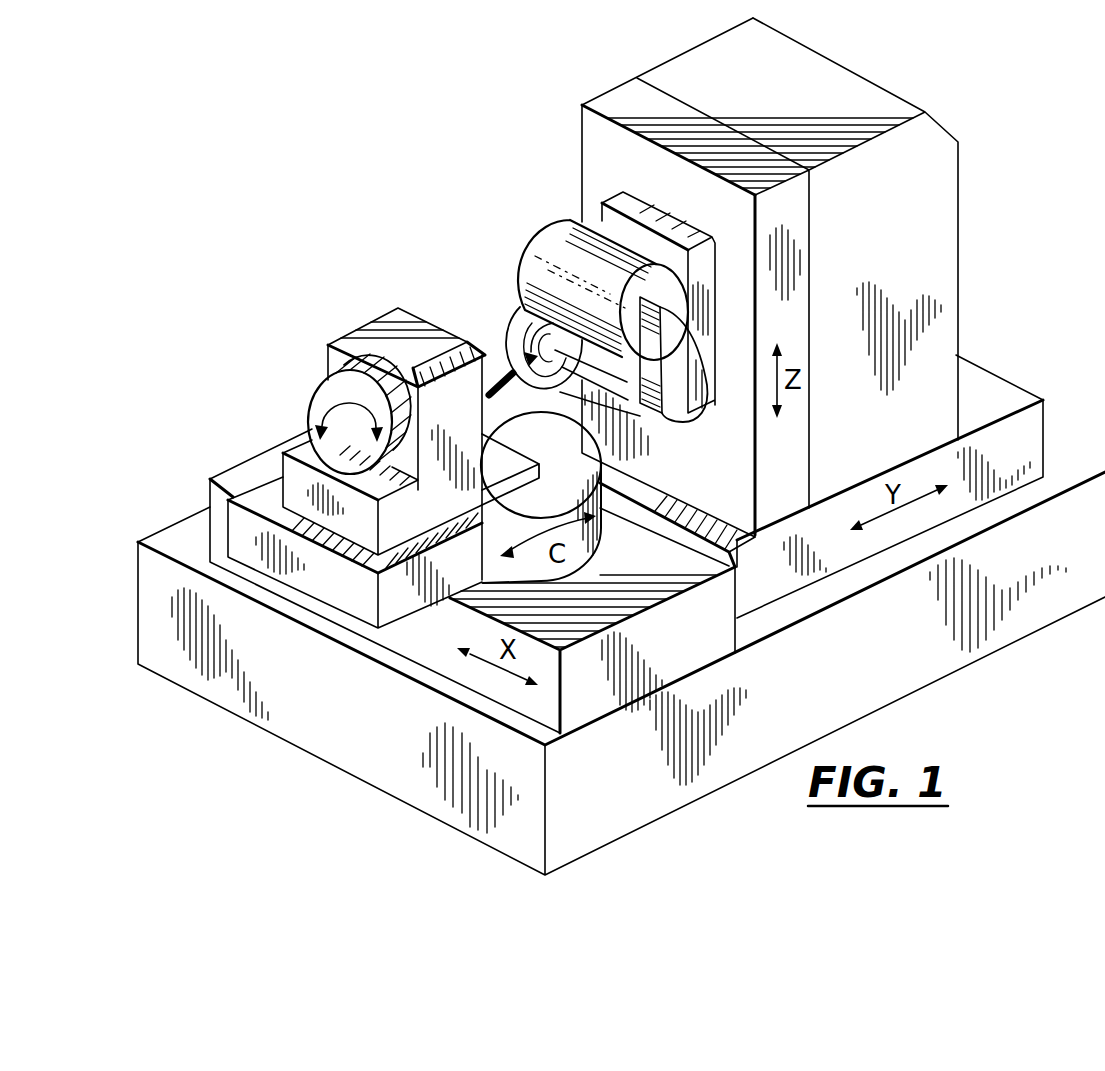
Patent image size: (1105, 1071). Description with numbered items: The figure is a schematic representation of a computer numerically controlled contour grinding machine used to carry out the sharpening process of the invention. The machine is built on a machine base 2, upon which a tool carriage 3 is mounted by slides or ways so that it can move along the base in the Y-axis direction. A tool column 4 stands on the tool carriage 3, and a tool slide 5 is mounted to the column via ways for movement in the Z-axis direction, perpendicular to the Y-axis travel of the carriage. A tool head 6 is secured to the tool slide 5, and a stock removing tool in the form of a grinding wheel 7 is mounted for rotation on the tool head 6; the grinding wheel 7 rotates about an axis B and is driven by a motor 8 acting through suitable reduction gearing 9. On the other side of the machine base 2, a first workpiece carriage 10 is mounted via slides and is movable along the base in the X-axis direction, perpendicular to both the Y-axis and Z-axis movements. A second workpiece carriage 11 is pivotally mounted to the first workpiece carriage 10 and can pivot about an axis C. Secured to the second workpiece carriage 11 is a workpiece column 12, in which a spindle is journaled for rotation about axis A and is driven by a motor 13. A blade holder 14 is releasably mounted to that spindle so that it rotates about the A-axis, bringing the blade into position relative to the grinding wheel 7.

The machine base 2 is at (806, 691).
The tool carriage 3 is at (1032, 428).
The tool column 4 is at (872, 224).
The tool slide 5 is at (617, 100).
The tool head 6 is at (650, 216).
The grinding wheel 7 is at (522, 315).
The motor 8 is at (585, 293).
The reduction gearing 9 is at (687, 400).
The first workpiece carriage 10 is at (424, 664).
The second workpiece carriage 11 is at (332, 590).
The workpiece column 12 is at (382, 338).
The motor 13 is at (310, 412).
The blade holder 14 is at (488, 346).